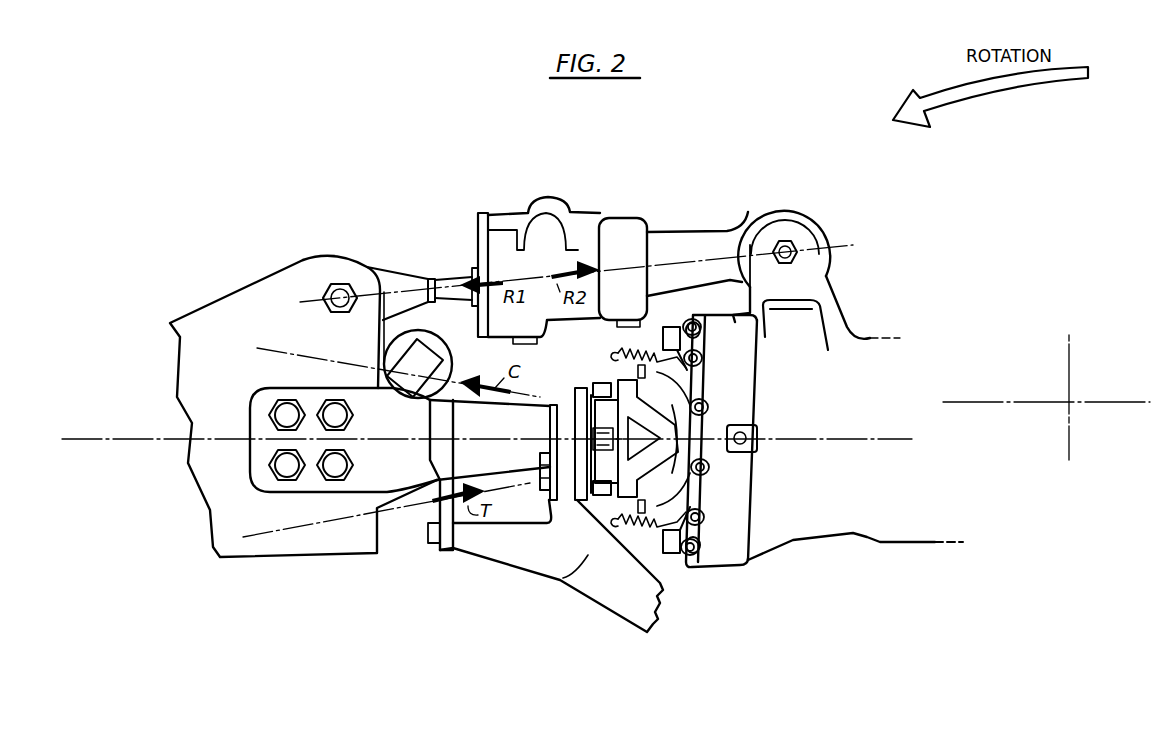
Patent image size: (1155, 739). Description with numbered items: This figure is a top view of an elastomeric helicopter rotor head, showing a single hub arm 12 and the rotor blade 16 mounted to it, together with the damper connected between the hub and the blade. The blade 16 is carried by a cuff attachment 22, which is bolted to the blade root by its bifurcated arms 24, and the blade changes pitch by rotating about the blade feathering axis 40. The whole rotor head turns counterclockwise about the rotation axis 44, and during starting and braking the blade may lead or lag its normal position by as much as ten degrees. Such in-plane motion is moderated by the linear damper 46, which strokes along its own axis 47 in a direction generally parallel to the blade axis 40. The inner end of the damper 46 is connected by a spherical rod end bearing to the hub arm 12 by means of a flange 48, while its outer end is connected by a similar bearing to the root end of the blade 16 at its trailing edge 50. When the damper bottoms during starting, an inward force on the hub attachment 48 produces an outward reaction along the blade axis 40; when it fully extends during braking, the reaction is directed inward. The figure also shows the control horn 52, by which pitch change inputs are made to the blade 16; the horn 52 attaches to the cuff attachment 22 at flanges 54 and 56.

The hub arm 12 is at (863, 342).
The rotor blade 16 is at (326, 545).
The cuff attachment 22 is at (514, 432).
The bifurcated arms 24 is at (385, 476).
The blade feathering axis 40 is at (122, 435).
The rotation axis 44 is at (1071, 402).
The linear damper 46 is at (560, 208).
The damper axis 47 is at (324, 300).
The flange 48 is at (786, 223).
The trailing edge 50 is at (318, 258).
The control horn 52 is at (634, 617).
The flange 54 is at (447, 549).
The flange 56 is at (544, 497).